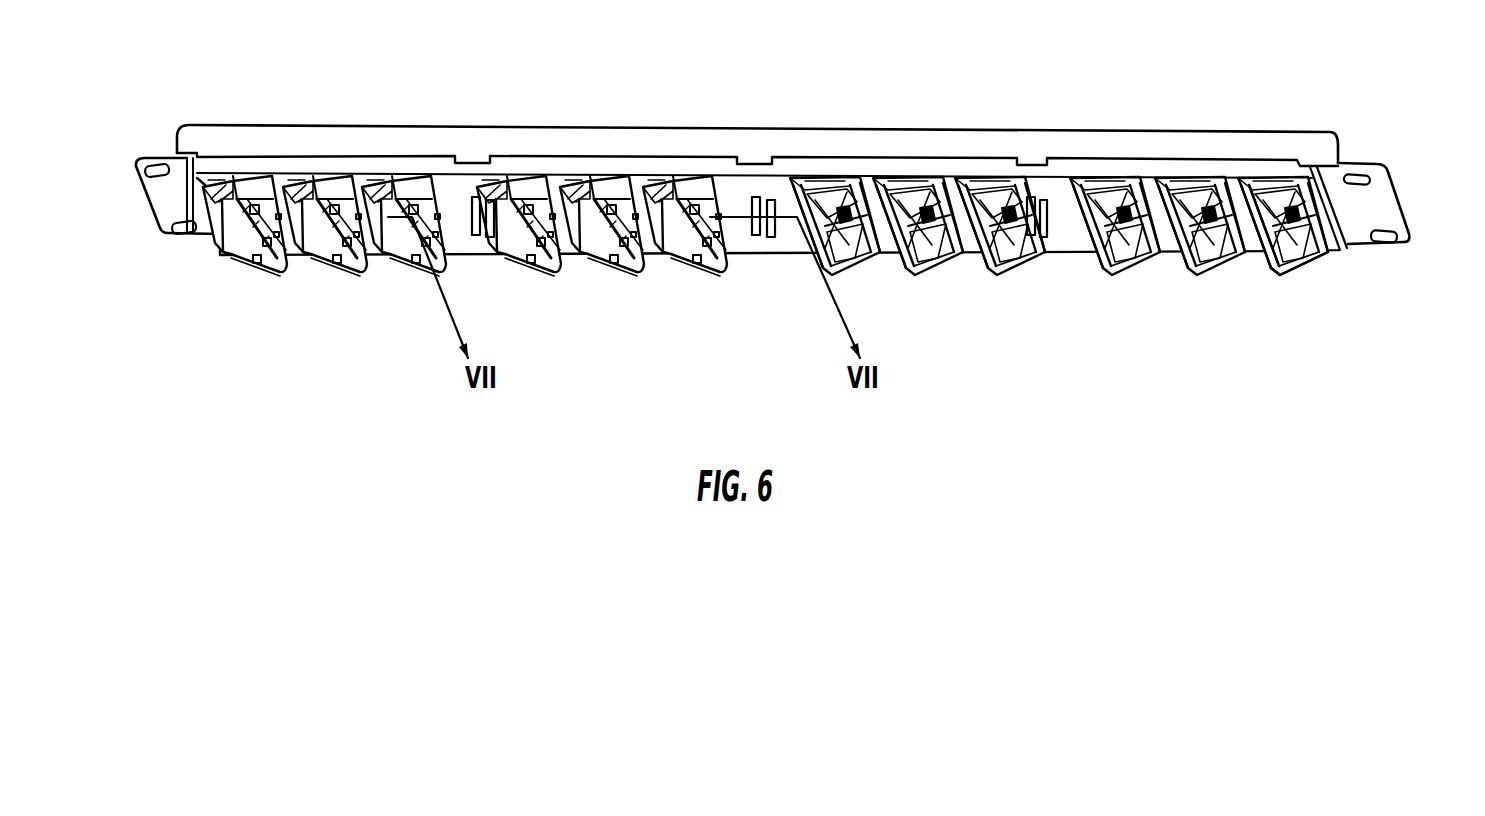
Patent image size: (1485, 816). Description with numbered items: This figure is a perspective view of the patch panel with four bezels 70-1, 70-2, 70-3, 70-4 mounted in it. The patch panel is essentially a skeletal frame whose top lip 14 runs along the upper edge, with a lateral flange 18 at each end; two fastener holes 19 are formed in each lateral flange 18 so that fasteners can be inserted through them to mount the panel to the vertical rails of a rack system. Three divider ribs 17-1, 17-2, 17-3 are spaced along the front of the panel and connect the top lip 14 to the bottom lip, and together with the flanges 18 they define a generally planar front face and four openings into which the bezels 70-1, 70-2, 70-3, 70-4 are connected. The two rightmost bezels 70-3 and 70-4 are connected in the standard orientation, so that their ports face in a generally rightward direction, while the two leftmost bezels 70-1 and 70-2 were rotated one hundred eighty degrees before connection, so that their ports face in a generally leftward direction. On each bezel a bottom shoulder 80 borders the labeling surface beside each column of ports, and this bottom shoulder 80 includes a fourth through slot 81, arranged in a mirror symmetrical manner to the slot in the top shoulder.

The top lip 14 is at (955, 141).
The divider rib 17-1 is at (472, 197).
The divider rib 17-2 is at (753, 197).
The divider rib 17-3 is at (1028, 197).
The lateral flange 18 is at (165, 203).
The fastener hole 19 is at (178, 238).
The bezel 70-1 is at (331, 172).
The bezel 70-2 is at (611, 172).
The bezel 70-3 is at (893, 172).
The bezel 70-4 is at (1199, 184).
The bottom shoulder 80 is at (1281, 267).
The fourth through slot 81 is at (1265, 261).